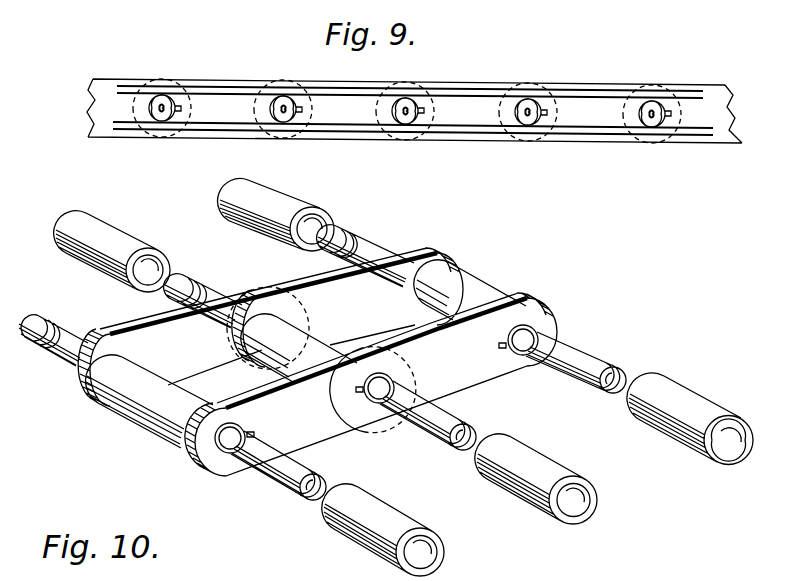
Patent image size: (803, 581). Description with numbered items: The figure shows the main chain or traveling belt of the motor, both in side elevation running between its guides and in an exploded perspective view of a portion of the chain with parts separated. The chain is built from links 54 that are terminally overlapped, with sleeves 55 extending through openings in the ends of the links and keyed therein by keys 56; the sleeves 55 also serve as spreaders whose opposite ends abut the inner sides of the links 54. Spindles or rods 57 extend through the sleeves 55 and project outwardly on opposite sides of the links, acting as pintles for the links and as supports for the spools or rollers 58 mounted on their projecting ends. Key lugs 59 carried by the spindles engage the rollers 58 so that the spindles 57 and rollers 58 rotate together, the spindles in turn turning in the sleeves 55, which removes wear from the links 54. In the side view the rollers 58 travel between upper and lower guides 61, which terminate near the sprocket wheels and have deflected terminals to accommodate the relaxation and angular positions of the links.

In FIG. 9, the upper and lower guides 61 is at (578, 134).
In FIG. 10, the links 54 is at (273, 291).
In FIG. 10, the sleeves 55 is at (165, 418).
In FIG. 10, the keys 56 is at (502, 350).
In FIG. 10, the spindles or rods 57 is at (573, 353).
In FIG. 10, the spools or rollers 58 is at (417, 525).
In FIG. 10, the key lugs 59 is at (245, 428).